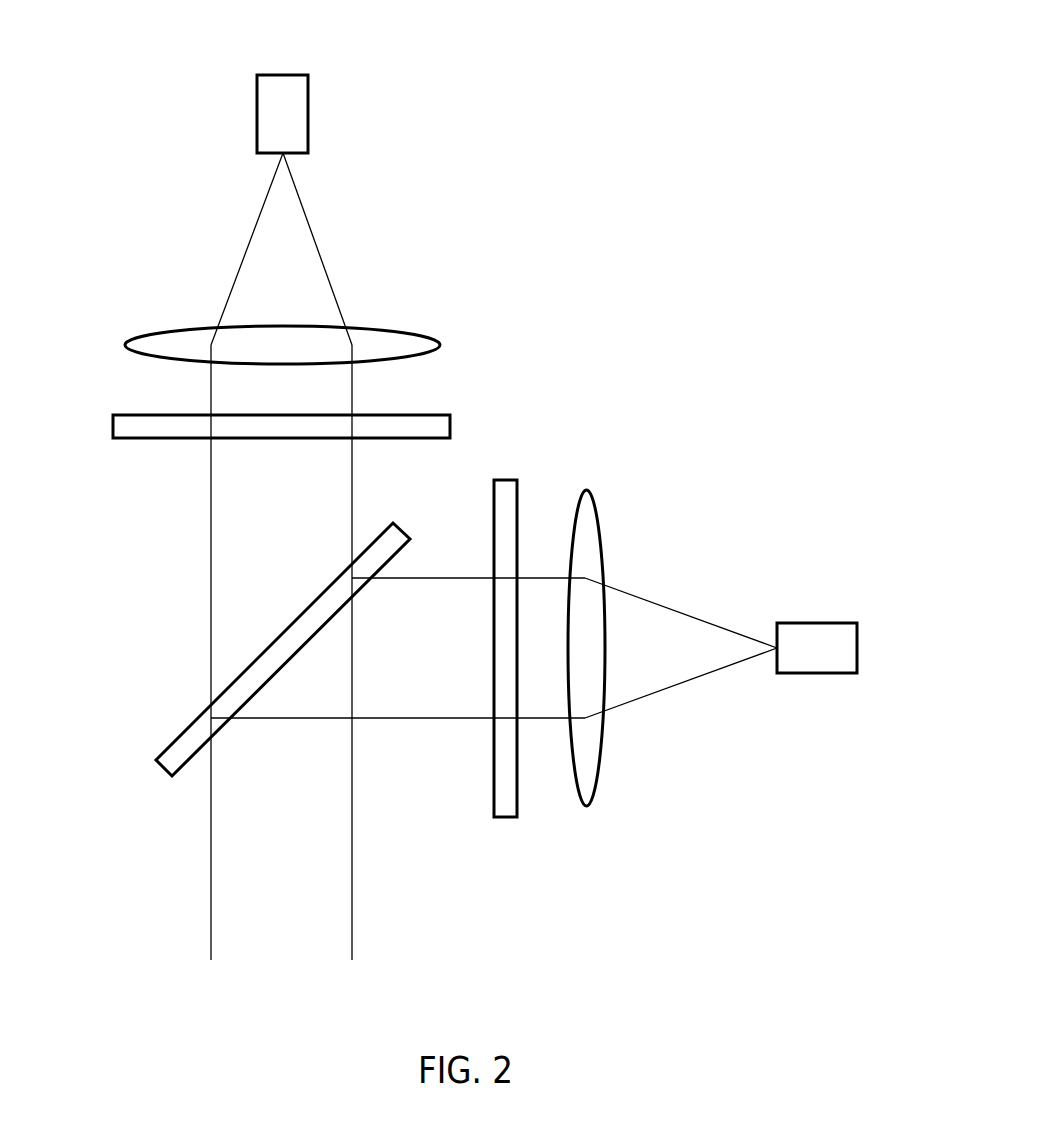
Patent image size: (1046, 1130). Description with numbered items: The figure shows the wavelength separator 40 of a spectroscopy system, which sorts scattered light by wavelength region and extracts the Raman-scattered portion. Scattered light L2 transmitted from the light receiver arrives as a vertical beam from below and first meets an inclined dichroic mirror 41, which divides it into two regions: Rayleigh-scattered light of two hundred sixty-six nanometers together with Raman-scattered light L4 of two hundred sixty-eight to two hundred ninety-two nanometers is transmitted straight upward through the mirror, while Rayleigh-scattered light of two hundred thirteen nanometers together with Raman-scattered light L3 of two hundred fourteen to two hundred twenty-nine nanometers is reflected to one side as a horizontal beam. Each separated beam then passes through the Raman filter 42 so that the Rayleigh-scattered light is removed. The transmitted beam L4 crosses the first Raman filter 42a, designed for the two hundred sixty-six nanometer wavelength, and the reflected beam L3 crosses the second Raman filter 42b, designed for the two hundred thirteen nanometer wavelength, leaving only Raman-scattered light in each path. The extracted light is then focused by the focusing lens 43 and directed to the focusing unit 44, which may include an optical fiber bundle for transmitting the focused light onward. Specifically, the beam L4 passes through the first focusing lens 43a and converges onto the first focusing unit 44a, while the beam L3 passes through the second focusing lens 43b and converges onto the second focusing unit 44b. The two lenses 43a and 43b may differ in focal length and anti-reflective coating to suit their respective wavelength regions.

The wavelength separator 40 is at (616, 96).
The dichroic mirror 41 is at (188, 724).
The Raman filter 42 is at (435, 589).
The first Raman filter 42a is at (113, 425).
The second Raman filter 42b is at (505, 817).
The focusing lens 43 is at (439, 601).
The first focusing lens 43a is at (125, 344).
The second focusing lens 43b is at (587, 807).
The focusing unit 44 is at (519, 411).
The first focusing unit 44a is at (257, 112).
The second focusing unit 44b is at (818, 673).
The scattered light L2 is at (353, 840).
The Raman-scattered light L3 is at (443, 578).
The Raman-scattered light L4 is at (352, 500).